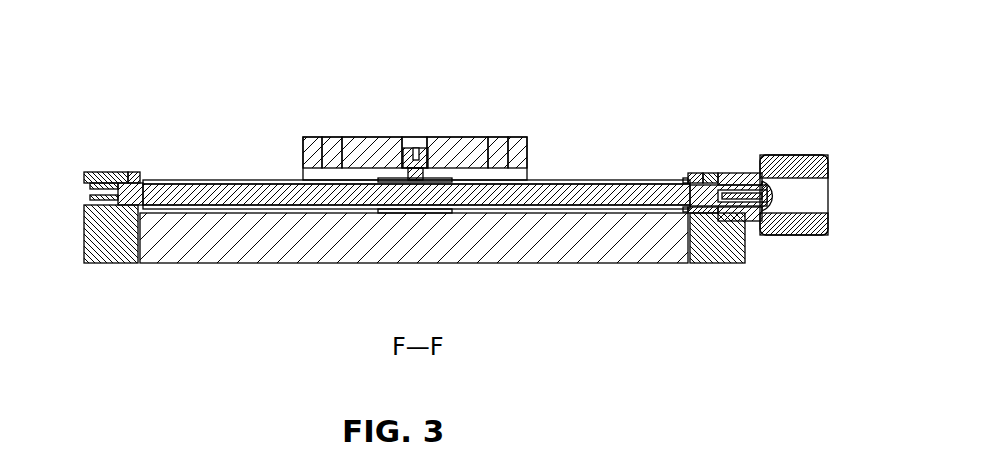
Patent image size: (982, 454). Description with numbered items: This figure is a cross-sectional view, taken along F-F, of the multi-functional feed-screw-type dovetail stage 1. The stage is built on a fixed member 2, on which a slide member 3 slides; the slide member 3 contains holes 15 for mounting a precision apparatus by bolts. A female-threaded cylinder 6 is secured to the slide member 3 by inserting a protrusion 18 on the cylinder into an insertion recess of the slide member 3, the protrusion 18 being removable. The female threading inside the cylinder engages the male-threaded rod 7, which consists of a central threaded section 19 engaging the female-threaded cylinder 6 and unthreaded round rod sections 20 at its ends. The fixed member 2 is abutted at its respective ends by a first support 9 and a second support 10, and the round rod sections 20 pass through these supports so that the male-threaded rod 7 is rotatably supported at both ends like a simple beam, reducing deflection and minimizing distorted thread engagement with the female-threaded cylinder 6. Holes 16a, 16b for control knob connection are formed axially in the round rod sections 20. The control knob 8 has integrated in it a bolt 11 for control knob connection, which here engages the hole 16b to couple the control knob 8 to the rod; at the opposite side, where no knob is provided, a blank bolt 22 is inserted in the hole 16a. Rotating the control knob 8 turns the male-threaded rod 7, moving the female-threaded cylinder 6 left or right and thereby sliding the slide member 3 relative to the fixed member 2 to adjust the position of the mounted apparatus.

The multi-functional feed-screw-type dovetail stage 1 is at (660, 82).
The fixed member 2 is at (560, 253).
The slide member 3 is at (470, 137).
The female-threaded cylinder 6 is at (393, 178).
The male-threaded rod 7 is at (234, 190).
The control knob 8 is at (818, 155).
The first support 9 is at (110, 263).
The second support 10 is at (720, 255).
The bolt for control knob connection 11 is at (800, 220).
The holes for mounting a precision apparatus 15 is at (330, 118).
The hole for control knob connection 16a is at (80, 187).
The hole for control knob connection 16b is at (745, 173).
The protrusion 18 is at (437, 137).
The central threaded section 19 is at (585, 182).
The round rod sections 20 is at (128, 172).
The blank bolt 22 is at (103, 172).